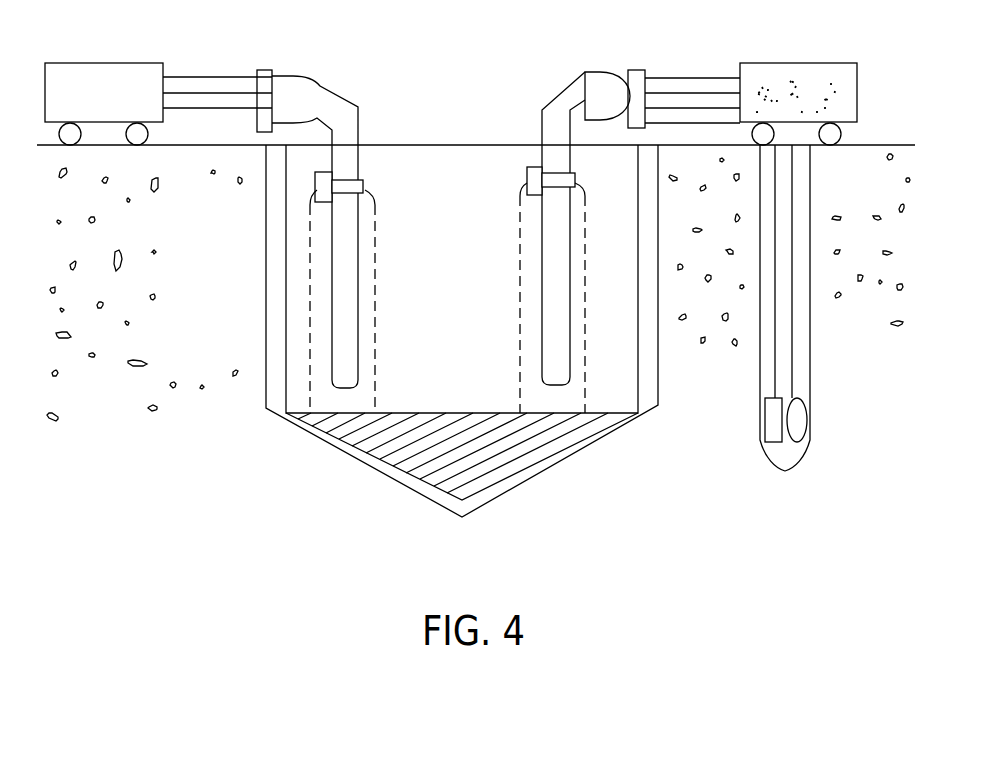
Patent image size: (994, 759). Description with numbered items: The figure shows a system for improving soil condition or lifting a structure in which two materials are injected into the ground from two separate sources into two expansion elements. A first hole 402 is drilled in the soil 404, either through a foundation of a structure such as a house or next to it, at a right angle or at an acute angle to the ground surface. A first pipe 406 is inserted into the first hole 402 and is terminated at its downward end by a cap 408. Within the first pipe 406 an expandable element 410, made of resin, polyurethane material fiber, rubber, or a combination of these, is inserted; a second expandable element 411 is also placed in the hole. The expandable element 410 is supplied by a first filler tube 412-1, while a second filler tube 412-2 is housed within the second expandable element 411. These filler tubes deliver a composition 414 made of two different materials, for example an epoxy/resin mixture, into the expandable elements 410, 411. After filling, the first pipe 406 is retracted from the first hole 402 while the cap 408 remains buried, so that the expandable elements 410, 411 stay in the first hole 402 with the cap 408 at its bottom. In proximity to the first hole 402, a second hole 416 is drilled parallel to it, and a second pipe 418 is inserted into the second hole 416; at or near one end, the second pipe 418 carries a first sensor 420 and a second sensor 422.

The first hole 402 is at (266, 200).
The soil 404 is at (103, 438).
The first pipe 406 is at (286, 268).
The cap 408 is at (320, 430).
The expandable element 410 is at (310, 222).
The second expandable element 411 is at (520, 210).
The first filler tube 412-1 is at (332, 312).
The second filler tube 412-2 is at (542, 258).
The composition 414 is at (125, 62).
The second hole 416 is at (810, 165).
The second pipe 418 is at (793, 322).
The first sensor 420 is at (762, 442).
The second sensor 422 is at (812, 442).